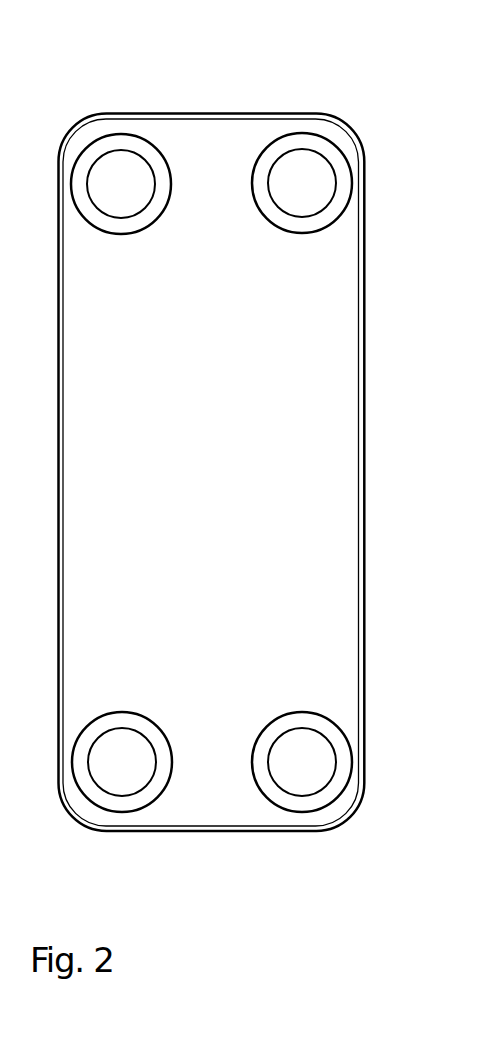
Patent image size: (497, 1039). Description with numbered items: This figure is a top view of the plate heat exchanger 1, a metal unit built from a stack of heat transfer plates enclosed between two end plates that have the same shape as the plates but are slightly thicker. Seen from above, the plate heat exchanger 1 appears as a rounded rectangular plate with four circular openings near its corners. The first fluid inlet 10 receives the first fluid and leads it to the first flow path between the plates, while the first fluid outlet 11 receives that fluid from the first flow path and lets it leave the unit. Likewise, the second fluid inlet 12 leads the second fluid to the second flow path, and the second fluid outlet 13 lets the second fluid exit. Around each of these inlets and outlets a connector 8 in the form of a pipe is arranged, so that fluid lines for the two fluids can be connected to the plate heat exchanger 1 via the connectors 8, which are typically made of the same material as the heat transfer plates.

The plate heat exchanger 1 is at (221, 80).
The connector 8 is at (97, 157).
The first fluid inlet 10 is at (118, 173).
The first fluid outlet 11 is at (317, 763).
The second fluid inlet 12 is at (134, 768).
The second fluid outlet 13 is at (300, 175).